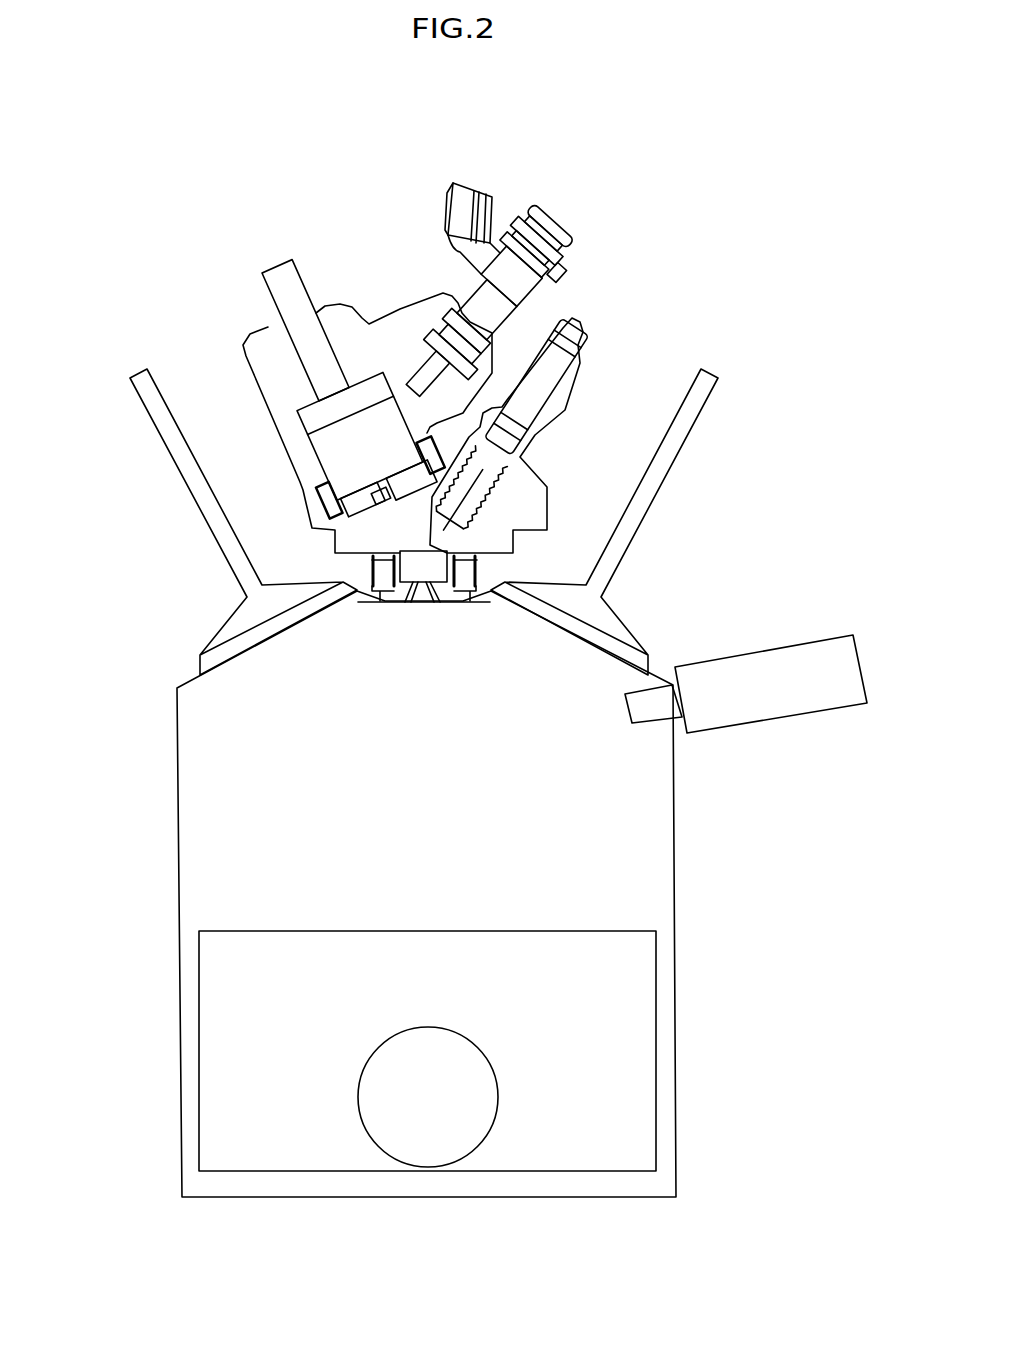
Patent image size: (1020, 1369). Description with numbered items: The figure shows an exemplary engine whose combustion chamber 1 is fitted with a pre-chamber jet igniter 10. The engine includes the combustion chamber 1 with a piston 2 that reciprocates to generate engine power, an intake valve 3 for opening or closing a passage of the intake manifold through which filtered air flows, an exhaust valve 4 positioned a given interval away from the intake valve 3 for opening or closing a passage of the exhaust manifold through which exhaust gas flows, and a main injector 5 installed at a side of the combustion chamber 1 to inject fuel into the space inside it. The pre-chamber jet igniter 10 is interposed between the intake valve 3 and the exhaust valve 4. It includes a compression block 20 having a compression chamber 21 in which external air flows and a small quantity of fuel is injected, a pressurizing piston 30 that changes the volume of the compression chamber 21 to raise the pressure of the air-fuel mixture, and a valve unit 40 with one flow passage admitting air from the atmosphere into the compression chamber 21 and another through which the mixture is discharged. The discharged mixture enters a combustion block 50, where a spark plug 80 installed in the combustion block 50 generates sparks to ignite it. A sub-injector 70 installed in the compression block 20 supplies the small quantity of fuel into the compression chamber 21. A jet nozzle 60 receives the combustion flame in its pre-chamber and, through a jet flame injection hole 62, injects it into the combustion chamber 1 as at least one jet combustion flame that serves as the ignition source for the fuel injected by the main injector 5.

The combustion chamber 1 is at (540, 835).
The piston 2 is at (620, 1088).
The intake valve 3 is at (230, 538).
The exhaust valve 4 is at (617, 547).
The main injector 5 is at (775, 700).
The pre-chamber jet igniter 10 is at (612, 207).
The compression block 20 is at (258, 355).
The compression chamber 21 is at (288, 285).
The pressurizing piston 30 is at (365, 445).
The valve unit 40 is at (410, 478).
The combustion block 50 is at (517, 492).
The jet nozzle 60 is at (450, 592).
The jet flame injection hole 62 is at (425, 602).
The sub-injector 70 is at (535, 240).
The spark plug 80 is at (574, 340).